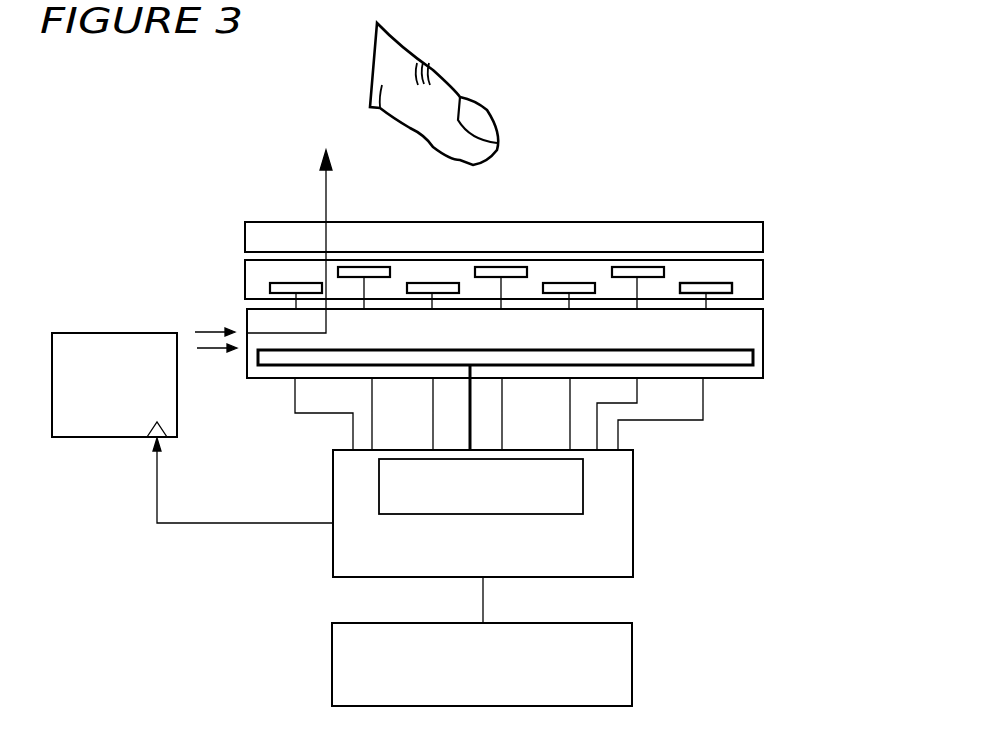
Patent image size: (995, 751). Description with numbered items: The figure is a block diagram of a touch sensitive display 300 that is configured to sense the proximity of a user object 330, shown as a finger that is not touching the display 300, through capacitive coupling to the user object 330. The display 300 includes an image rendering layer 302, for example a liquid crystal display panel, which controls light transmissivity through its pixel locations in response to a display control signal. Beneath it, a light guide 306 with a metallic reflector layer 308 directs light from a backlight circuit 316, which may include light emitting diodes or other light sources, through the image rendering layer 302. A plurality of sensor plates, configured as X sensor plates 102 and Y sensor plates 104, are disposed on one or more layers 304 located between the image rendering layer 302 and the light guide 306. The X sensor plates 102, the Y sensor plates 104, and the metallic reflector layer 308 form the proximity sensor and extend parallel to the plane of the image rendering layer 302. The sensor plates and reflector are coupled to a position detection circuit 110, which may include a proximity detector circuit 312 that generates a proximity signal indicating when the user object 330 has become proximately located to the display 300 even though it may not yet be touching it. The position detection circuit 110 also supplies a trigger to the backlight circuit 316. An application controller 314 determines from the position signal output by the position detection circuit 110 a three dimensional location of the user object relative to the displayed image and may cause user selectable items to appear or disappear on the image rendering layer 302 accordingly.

The touch sensitive display 300 is at (605, 153).
The user object 330 is at (435, 68).
The X sensor plates 102 is at (634, 266).
The Y sensor plates 104 is at (704, 281).
The image rendering layer 302 is at (765, 236).
The layers 304 is at (765, 278).
The light guide 306 is at (765, 335).
The metallic reflector layer 308 is at (723, 364).
The proximity detector circuit 312 is at (532, 508).
The position detection circuit 110 is at (590, 570).
The application controller 314 is at (608, 673).
The backlight circuit 316 is at (168, 401).